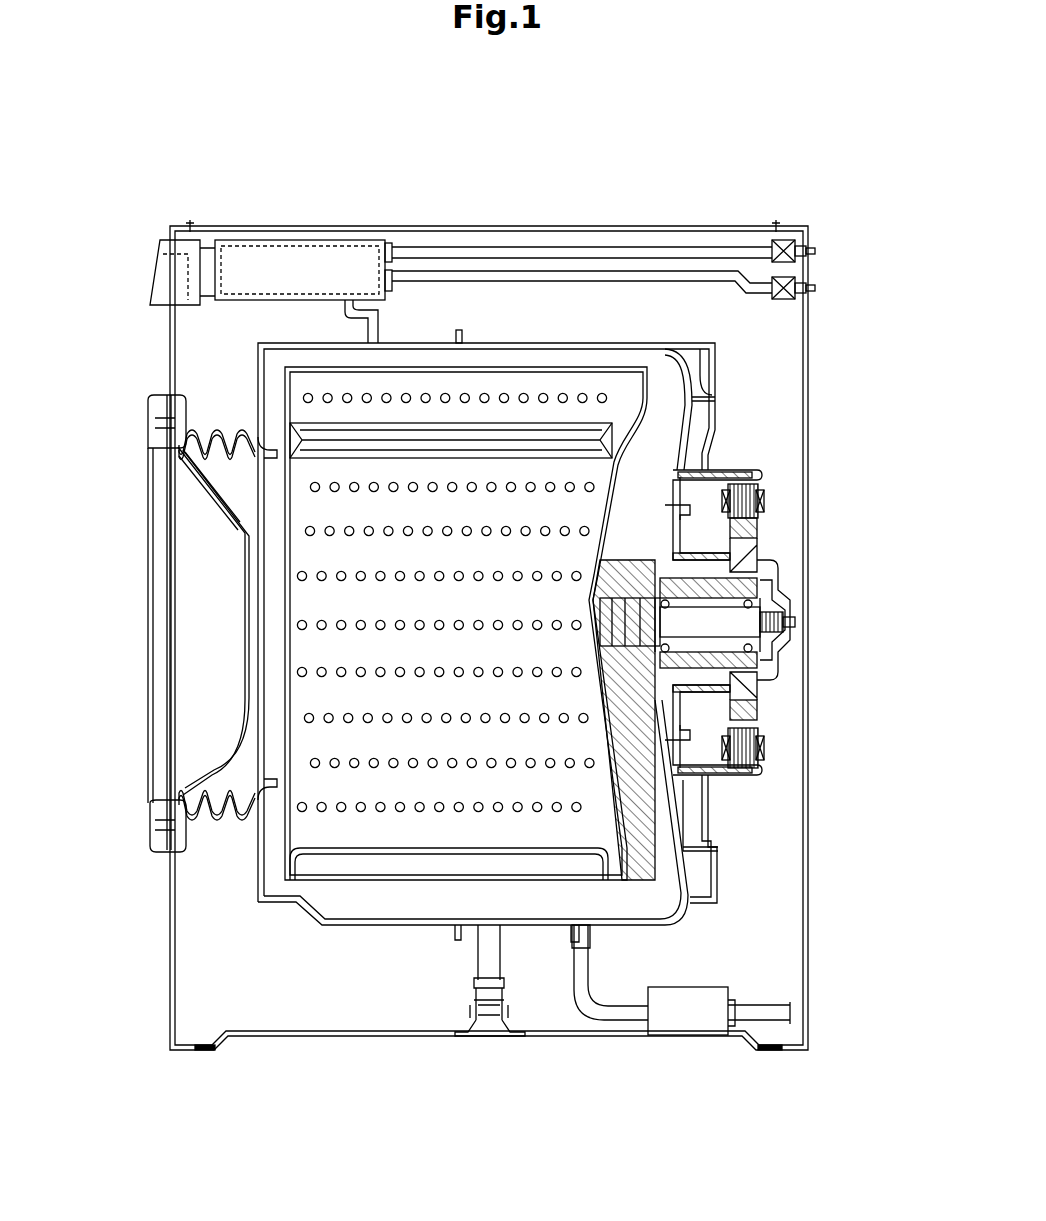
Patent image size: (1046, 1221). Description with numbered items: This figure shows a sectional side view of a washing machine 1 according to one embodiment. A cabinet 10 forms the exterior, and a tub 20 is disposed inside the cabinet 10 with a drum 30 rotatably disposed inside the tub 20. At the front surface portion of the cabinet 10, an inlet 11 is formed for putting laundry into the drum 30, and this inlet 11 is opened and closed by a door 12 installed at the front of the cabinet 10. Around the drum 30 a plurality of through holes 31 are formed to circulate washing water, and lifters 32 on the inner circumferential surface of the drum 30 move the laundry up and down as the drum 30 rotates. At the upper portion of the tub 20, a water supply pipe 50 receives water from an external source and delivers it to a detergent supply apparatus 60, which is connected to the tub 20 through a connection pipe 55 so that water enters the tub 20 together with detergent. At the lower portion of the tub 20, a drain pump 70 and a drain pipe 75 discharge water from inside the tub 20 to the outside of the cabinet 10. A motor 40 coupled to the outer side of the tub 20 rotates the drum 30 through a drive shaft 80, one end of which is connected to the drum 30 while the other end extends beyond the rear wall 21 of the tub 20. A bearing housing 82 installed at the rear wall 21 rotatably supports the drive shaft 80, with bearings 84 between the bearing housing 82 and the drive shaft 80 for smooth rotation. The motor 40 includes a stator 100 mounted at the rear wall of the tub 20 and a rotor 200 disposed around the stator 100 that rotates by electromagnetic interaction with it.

The washing machine 1 is at (481, 139).
The cabinet 10 is at (150, 341).
The inlet 11 is at (222, 470).
The door 12 is at (152, 632).
The tub 20 is at (572, 320).
The rear wall 21 is at (690, 425).
The drum 30 is at (470, 583).
The through holes 31 is at (483, 580).
The lifters 32 is at (418, 452).
The motor 40 is at (763, 660).
The water supply pipe 50 is at (661, 280).
The connection pipe 55 is at (372, 328).
The detergent supply apparatus 60 is at (320, 255).
The drain pump 70 is at (712, 998).
The drain pipe 75 is at (588, 965).
The drive shaft 80 is at (722, 625).
The bearing housing 82 is at (652, 698).
The bearings 84 is at (668, 682).
The stator 100 is at (750, 497).
The rotor 200 is at (752, 537).